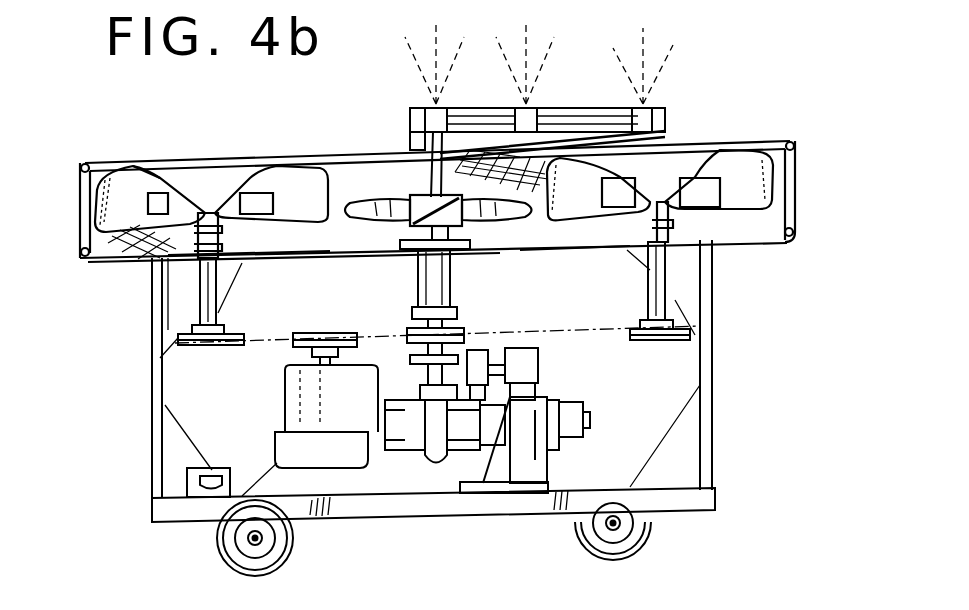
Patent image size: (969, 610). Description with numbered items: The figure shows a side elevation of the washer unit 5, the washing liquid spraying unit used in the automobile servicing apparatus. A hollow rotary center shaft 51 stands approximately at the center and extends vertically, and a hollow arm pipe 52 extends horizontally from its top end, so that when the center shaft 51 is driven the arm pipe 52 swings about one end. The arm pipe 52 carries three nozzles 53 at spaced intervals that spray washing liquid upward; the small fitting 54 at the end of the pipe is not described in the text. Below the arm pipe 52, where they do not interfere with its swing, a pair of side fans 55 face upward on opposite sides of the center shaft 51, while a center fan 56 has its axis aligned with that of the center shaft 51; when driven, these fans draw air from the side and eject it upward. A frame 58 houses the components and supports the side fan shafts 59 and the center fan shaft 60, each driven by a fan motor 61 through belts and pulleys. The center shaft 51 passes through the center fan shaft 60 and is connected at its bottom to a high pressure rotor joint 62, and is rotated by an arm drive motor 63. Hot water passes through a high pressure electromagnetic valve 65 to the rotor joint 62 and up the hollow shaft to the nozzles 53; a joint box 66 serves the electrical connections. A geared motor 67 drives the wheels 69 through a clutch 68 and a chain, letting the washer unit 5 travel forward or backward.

The washer unit 5 is at (700, 350).
The rotary center shaft 51 is at (425, 143).
The arm pipe 52 is at (472, 107).
The nozzles 53 is at (525, 106).
The spray nozzle 54 is at (668, 112).
The side fans 55 is at (130, 182).
The center fan 56 is at (375, 200).
The frame 58 is at (155, 294).
The side fan shafts 59 is at (222, 301).
The center fan shaft 60 is at (420, 278).
The fan motor 61 is at (285, 388).
The high pressure rotor joint 62 is at (445, 396).
The arm drive motor 63 is at (412, 363).
The high pressure electromagnetic valve 65 is at (522, 368).
The joint box 66 is at (215, 474).
The geared motor 67 is at (545, 398).
The clutch 68 is at (583, 426).
The wheels 69 is at (292, 550).